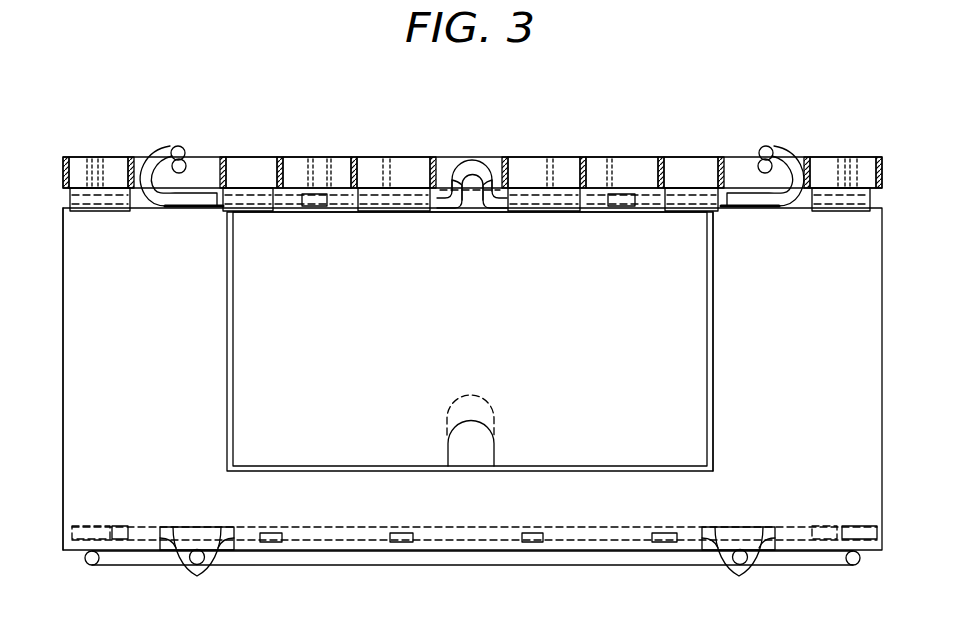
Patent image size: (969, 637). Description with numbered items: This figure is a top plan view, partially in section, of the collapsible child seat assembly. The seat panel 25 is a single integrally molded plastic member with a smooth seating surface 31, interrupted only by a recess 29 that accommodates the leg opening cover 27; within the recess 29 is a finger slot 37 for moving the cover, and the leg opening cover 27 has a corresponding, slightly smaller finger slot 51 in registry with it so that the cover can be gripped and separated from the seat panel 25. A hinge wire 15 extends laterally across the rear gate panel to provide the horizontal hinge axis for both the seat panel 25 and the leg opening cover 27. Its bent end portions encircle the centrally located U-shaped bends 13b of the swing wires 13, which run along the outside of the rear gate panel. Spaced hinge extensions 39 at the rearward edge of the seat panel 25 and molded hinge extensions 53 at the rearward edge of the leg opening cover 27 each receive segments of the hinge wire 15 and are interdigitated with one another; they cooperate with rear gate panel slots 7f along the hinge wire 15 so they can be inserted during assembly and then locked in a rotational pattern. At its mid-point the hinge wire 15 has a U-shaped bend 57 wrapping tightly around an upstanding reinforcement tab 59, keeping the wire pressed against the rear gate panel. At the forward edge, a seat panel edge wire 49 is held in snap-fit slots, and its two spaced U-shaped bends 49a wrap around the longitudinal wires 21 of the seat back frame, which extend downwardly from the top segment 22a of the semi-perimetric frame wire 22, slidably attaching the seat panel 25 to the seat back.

The rear gate panel slots 7f is at (263, 165).
The swing wires 13 is at (188, 166).
The U-shaped bends 13b is at (170, 147).
The hinge wire 15 is at (499, 195).
The longitudinal wires 21 is at (210, 562).
The semi-perimetric frame wire 22 is at (857, 558).
The top segment 22a is at (583, 567).
The seat panel 25 is at (63, 372).
The leg opening cover 27 is at (362, 333).
The recess 29 is at (713, 323).
The seating surface 31 is at (160, 333).
The finger slot 37 is at (497, 405).
The hinge extensions 39 is at (400, 183).
The seat panel edge wire 49 is at (228, 527).
The U-shaped bends 49a is at (182, 573).
The finger slot 51 is at (495, 450).
The hinge extensions 53 is at (306, 176).
The U-shaped bend 57 is at (473, 173).
The reinforcement tab 59 is at (468, 210).